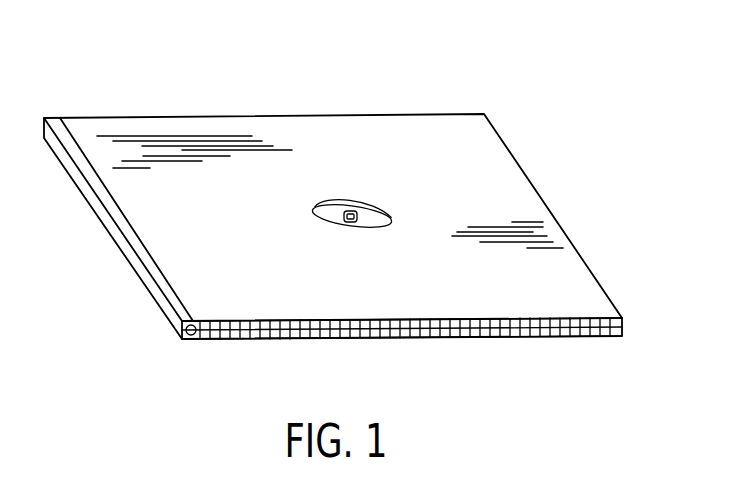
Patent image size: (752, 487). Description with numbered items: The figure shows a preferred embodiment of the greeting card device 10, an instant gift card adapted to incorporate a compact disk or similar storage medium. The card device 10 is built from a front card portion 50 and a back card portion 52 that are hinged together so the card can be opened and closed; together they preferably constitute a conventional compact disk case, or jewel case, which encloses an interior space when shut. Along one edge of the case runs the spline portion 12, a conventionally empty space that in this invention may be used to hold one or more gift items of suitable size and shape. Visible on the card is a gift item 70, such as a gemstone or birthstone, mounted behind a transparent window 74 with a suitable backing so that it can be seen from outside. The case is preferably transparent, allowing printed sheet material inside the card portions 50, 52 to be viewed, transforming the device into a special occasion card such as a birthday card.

The card device 10 is at (231, 112).
The spline portion 12 is at (111, 205).
The front card portion 50 is at (452, 338).
The back card portion 52 is at (490, 153).
The gift item 70 is at (353, 208).
The transparent window 74 is at (375, 228).